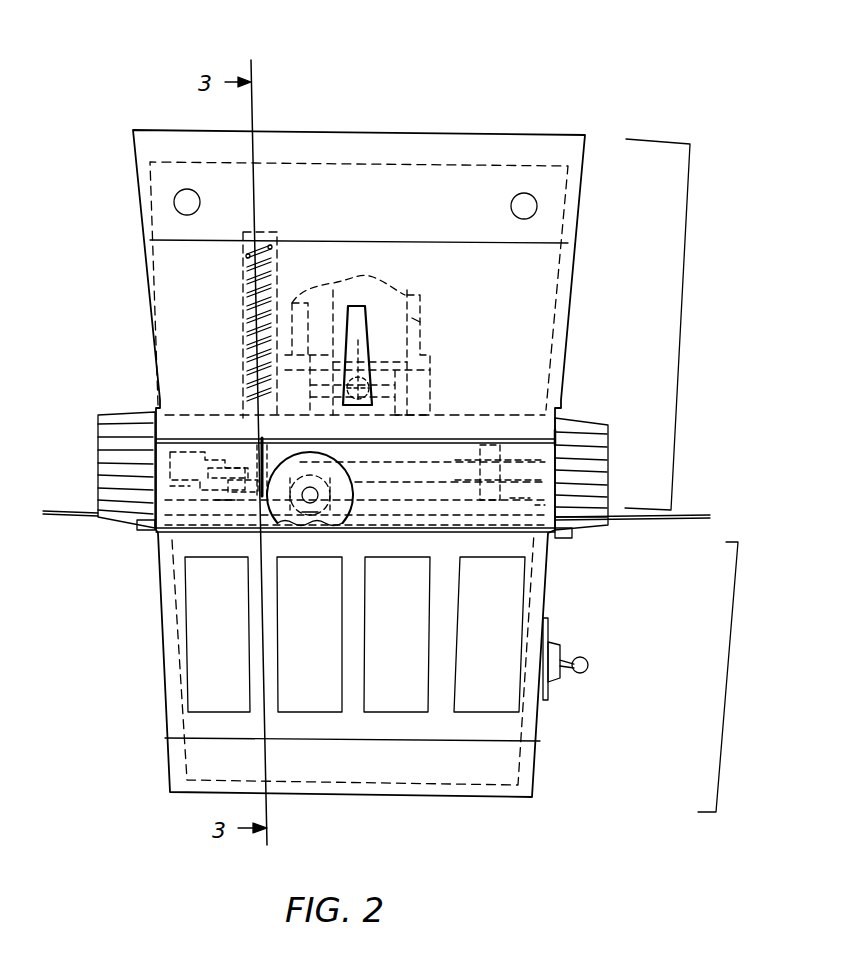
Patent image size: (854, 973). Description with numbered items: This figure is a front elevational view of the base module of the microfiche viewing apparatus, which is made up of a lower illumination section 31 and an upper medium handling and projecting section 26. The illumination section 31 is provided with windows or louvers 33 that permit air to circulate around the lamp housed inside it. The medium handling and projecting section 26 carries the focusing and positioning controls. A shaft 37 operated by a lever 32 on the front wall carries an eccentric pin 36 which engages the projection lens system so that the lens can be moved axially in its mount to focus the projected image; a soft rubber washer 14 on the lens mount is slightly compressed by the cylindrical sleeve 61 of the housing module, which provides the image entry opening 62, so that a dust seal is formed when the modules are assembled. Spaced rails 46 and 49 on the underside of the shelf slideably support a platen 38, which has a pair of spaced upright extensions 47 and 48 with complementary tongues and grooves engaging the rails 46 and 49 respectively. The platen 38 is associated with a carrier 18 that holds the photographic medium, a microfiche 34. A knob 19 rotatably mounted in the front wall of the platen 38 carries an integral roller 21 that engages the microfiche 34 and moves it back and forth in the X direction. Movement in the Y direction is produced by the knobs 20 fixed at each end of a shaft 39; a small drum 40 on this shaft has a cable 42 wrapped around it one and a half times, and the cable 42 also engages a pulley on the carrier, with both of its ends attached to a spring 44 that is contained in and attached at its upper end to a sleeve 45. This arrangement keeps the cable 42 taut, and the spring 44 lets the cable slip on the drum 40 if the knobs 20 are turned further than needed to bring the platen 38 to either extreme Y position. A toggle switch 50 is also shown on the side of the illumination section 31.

The soft rubber washer 14 is at (436, 372).
The carrier 18 is at (575, 536).
The knob 19 is at (335, 470).
The knob 20 is at (130, 428).
The roller 21 is at (310, 525).
The medium handling and projecting section 26 is at (672, 350).
The illumination section 31 is at (728, 667).
The lever 32 is at (366, 324).
The windows or louvers 33 is at (355, 634).
The microfiche 34 is at (65, 518).
The eccentric pin 36 is at (357, 337).
The shaft 37 is at (372, 382).
The platen 38 is at (545, 520).
The shaft 39 is at (540, 442).
The small drum 40 is at (250, 470).
The cable 42 is at (266, 445).
The spring 44 is at (284, 319).
The sleeve 45 is at (276, 244).
The rail 46 is at (215, 455).
The upright extension 47 is at (225, 530).
The upright extension 48 is at (205, 462).
The rail 49 is at (185, 490).
The toggle switch 50 is at (562, 645).
The cylindrical sleeve 61 is at (419, 322).
The image entry opening 62 is at (408, 297).